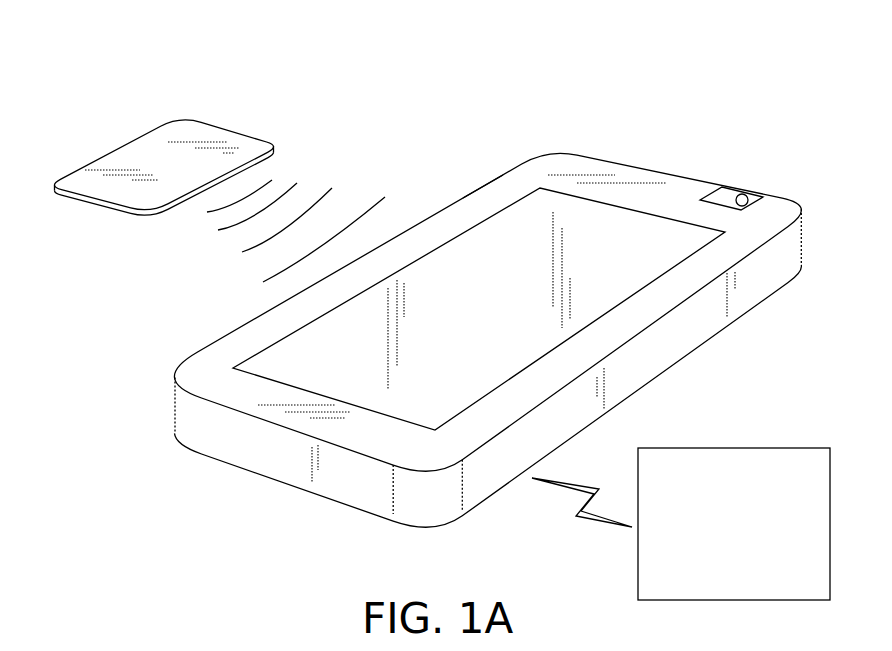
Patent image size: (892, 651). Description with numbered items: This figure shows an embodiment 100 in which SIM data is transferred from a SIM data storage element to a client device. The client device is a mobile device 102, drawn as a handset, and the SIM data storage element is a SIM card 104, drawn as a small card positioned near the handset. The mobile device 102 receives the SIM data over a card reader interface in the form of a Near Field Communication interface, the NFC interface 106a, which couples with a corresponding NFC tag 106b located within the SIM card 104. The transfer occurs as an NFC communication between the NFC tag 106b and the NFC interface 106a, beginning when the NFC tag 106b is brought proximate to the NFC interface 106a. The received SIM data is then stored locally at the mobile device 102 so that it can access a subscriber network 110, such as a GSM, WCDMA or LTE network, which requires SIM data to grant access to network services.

The embodiment 100 is at (582, 90).
The mobile device 102 is at (610, 160).
The SIM card 104 is at (227, 130).
The NFC interface 106a is at (483, 188).
The NFC tag 106b is at (147, 148).
The subscriber network 110 is at (715, 448).